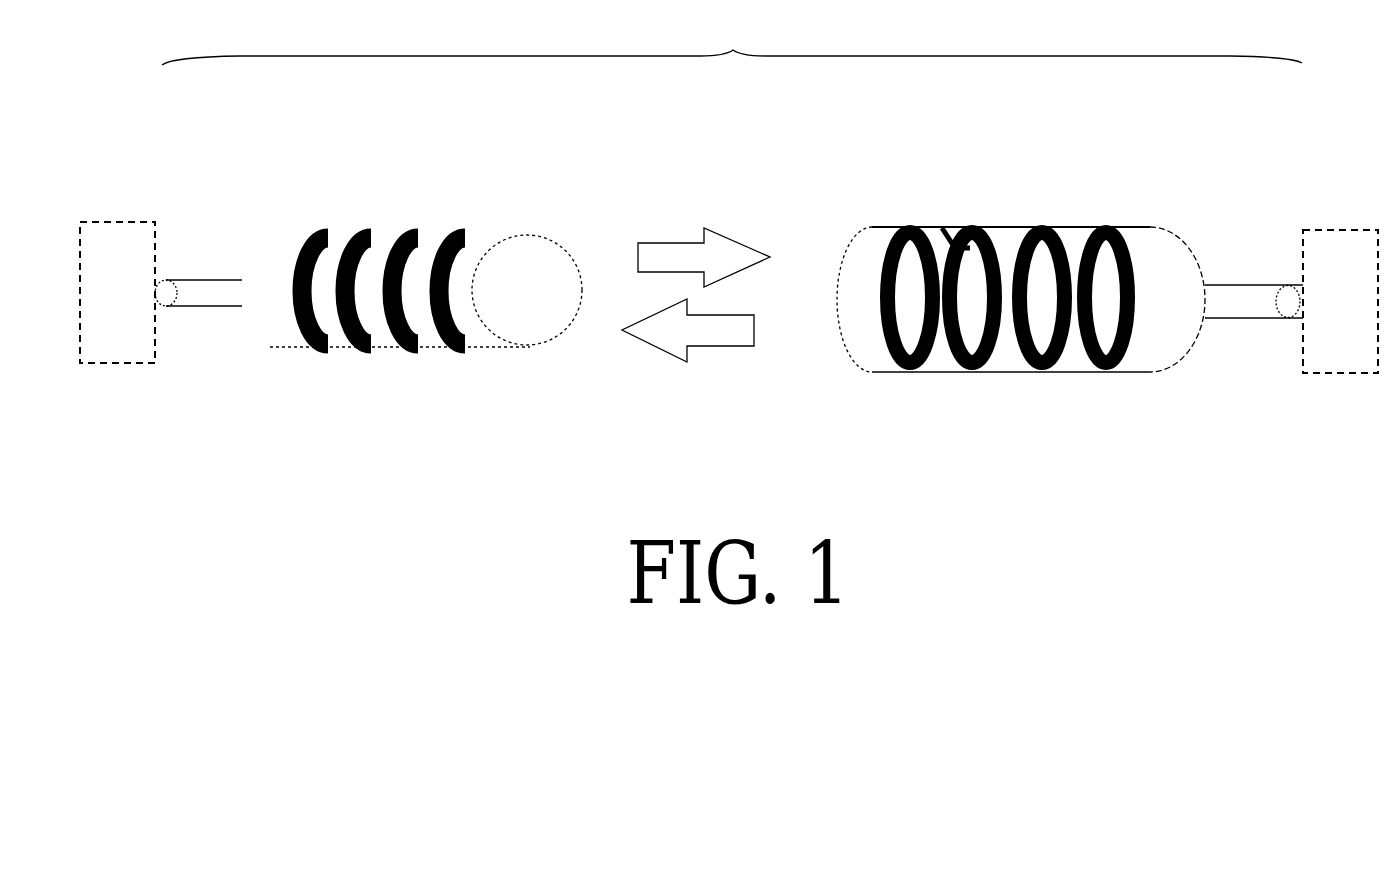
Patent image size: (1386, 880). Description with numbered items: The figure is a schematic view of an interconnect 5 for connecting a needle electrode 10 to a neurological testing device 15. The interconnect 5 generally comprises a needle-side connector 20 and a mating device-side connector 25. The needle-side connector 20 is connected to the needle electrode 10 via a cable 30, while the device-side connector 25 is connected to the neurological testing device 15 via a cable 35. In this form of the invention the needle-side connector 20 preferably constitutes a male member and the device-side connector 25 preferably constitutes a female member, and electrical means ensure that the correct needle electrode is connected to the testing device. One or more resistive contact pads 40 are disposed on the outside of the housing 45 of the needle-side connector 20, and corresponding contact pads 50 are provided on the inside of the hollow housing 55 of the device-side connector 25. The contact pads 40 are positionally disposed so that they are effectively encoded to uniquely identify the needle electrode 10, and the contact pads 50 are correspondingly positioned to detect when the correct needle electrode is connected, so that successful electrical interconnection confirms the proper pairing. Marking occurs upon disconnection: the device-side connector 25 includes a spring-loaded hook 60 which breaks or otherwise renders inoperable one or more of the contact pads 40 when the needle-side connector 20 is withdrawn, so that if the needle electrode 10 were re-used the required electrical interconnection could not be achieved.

The interconnect 5 is at (732, 41).
The needle electrode 10 is at (99, 367).
The neurological testing device 15 is at (1342, 378).
The needle-side connector 20 is at (423, 326).
The device-side connector 25 is at (1006, 317).
The cable 30 is at (192, 315).
The cable 35 is at (1237, 318).
The resistive contact pads 40 is at (327, 358).
The housing 45 is at (485, 218).
The contact pads 50 is at (947, 360).
The hollow housing 55 is at (1078, 213).
The spring-loaded hook 60 is at (948, 223).